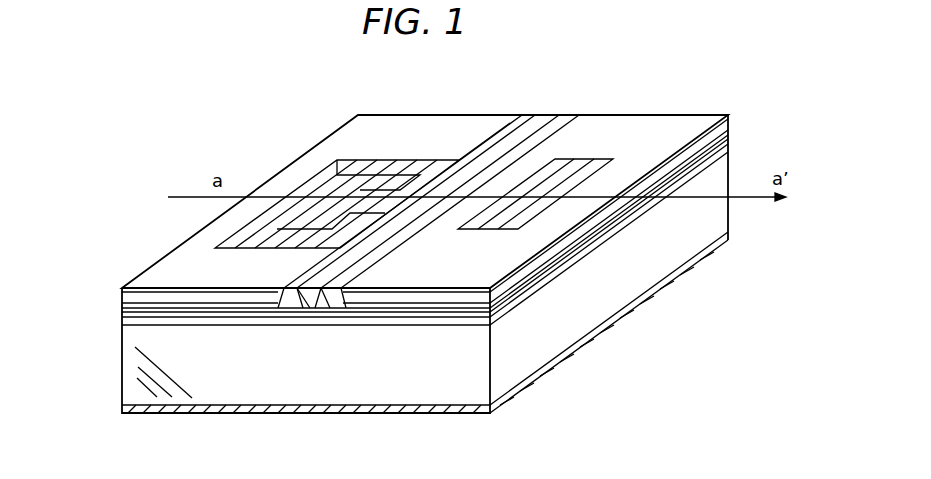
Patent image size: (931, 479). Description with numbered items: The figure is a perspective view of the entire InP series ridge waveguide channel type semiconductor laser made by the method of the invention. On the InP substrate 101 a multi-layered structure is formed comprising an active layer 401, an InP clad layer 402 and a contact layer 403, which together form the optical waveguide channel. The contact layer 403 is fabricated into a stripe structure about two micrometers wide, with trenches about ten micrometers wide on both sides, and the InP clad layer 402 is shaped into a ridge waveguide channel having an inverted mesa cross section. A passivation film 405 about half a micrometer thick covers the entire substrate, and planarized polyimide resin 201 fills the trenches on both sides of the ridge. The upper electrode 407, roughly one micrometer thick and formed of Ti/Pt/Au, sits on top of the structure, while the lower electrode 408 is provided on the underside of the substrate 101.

The InP substrate 101 is at (473, 381).
The planarized polyimide resin 201 is at (258, 238).
The active layer 401 is at (122, 318).
The InP clad layer 402 is at (125, 300).
The contact layer 403 is at (121, 289).
The passivation film 405 is at (178, 262).
The upper electrode 407 is at (575, 165).
The lower electrode 408 is at (603, 331).